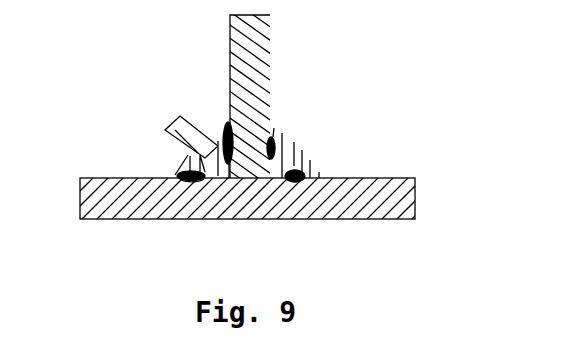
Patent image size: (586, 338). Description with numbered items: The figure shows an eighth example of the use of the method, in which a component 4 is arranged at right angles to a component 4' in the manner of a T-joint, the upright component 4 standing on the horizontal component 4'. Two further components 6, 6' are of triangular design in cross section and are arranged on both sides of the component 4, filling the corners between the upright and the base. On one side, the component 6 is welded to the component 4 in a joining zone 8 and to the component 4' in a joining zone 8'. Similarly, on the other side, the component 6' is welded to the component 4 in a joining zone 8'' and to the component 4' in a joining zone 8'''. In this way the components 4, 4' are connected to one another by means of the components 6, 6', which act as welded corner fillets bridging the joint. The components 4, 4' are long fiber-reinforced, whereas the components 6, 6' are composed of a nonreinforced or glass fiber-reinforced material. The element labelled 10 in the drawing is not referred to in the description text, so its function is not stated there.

The component 4 is at (278, 106).
The component 4' is at (237, 221).
The component 6 is at (192, 108).
The component 6' is at (331, 137).
The joining zone 8 is at (216, 105).
The joining zone 8' is at (186, 217).
The joining zone 8'' is at (298, 122).
The joining zone 8''' is at (308, 214).
The nozzle 10 is at (170, 143).